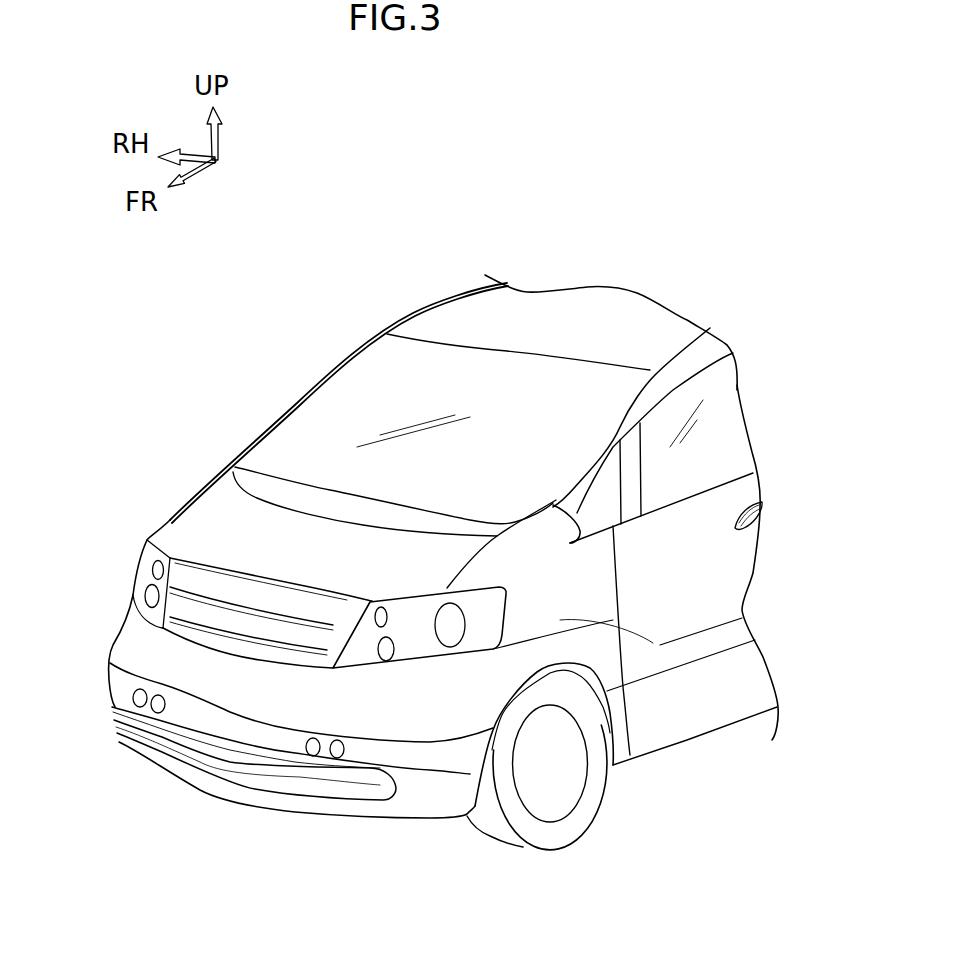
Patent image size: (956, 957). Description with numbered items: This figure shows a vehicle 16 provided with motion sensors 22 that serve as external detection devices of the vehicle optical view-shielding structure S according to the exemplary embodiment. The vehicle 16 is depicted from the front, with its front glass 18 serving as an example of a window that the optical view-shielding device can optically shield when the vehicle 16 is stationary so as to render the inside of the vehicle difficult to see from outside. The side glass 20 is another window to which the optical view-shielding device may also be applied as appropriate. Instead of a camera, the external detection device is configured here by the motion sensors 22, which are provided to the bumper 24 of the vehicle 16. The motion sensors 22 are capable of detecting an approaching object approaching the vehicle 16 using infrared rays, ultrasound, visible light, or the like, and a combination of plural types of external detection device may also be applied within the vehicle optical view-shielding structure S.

The vehicle 16 is at (412, 274).
The front glass 18 is at (388, 373).
The side glass 20 is at (720, 438).
The motion sensors 22 is at (155, 712).
The bumper 24 is at (228, 740).
The vehicle optical view-shielding structure S is at (300, 368).